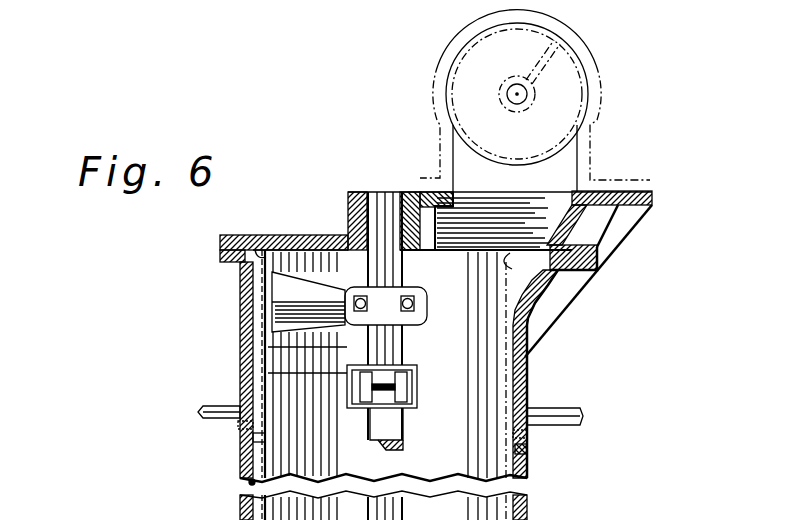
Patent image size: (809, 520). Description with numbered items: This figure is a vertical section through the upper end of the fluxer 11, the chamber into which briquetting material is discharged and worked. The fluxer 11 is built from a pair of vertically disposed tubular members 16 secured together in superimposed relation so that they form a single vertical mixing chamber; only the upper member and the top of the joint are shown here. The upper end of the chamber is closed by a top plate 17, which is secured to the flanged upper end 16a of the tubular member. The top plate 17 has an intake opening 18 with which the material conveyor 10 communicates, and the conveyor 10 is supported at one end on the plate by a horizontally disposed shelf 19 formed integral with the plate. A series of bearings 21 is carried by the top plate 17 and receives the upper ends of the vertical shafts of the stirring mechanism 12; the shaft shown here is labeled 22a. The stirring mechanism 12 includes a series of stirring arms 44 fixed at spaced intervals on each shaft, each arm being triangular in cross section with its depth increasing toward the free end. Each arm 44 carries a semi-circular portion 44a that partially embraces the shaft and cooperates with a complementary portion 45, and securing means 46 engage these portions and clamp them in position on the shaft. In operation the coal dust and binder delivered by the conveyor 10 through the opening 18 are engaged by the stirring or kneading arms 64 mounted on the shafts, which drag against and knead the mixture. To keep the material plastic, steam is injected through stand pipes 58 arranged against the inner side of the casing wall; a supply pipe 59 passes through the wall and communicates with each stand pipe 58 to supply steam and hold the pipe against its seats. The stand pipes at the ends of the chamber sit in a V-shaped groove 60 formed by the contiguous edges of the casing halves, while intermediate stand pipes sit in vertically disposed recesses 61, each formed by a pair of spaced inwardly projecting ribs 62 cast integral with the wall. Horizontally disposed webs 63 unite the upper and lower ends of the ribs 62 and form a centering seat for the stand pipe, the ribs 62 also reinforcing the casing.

The material conveyor 10 is at (588, 82).
The fluxer 11 is at (226, 307).
The stirring mechanism 12 is at (356, 343).
The tubular members 16 is at (240, 437).
The flanged upper end 16a is at (222, 260).
The top plate 17 is at (272, 235).
The intake opening 18 is at (533, 220).
The shelf 19 is at (652, 192).
The bearings 21 is at (343, 203).
The shaft 22a is at (386, 195).
The stirring arms 44 is at (308, 302).
The semi-circular portion 44a is at (422, 290).
The complementary portion 45 is at (415, 368).
The securing means 46 is at (418, 388).
The stand pipes 58 is at (249, 482).
The supply pipe 59 is at (205, 407).
The V-shaped groove 60 is at (390, 460).
The recesses 61 is at (527, 452).
The ribs 62 is at (240, 345).
The webs 63 is at (248, 236).
The stirring or kneading arms 64 is at (243, 427).